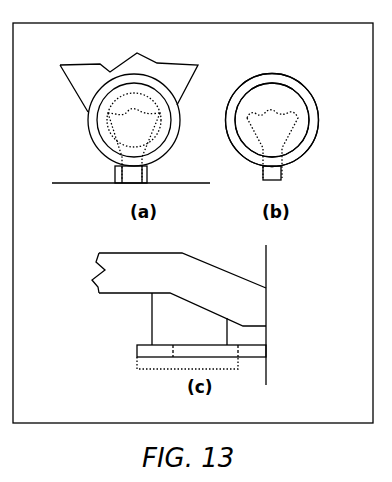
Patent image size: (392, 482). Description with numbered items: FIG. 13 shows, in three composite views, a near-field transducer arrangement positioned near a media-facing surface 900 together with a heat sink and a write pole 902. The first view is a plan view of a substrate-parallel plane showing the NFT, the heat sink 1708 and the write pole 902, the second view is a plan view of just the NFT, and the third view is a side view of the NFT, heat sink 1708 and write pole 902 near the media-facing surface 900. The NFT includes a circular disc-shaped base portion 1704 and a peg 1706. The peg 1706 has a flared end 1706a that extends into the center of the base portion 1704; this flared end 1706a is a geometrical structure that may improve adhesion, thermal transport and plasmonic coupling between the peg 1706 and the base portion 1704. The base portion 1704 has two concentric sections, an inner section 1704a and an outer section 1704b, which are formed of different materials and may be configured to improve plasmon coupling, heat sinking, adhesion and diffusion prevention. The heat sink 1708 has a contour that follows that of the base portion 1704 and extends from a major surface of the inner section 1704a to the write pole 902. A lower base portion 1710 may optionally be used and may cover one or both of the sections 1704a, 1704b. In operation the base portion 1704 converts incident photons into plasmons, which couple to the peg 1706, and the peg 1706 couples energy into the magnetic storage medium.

The media-facing surface 900 is at (85, 187).
The write pole 902 is at (92, 65).
The base portion 1704 is at (88, 133).
The inner section 1704a is at (308, 90).
The outer section 1704b is at (243, 110).
The peg 1706 is at (118, 169).
The flared end 1706a is at (255, 127).
The heat sink 1708 is at (113, 107).
The lower base portion 1710 is at (147, 367).